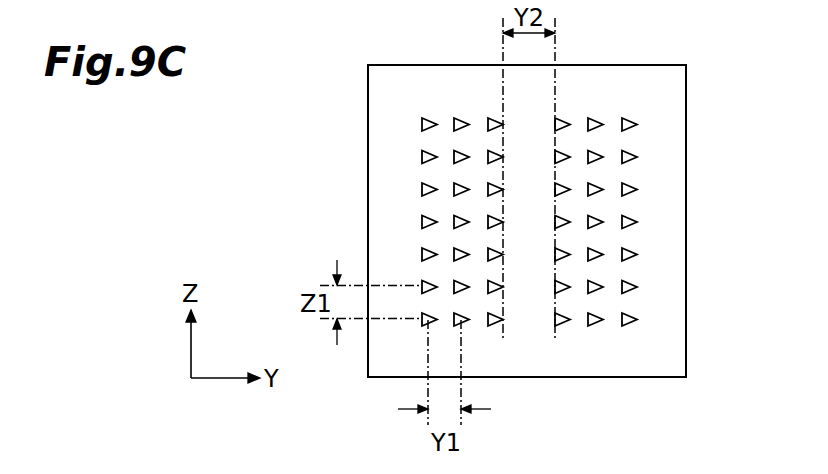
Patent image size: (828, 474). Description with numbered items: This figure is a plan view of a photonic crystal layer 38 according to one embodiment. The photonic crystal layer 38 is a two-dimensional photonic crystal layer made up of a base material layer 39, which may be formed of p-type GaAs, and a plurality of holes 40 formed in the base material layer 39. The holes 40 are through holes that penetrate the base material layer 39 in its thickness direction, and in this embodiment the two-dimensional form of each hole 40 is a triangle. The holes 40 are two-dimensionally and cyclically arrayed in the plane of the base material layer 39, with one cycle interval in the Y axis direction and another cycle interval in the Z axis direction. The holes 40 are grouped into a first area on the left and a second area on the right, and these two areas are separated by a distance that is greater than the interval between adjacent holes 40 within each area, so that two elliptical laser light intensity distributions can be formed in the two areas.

The photonic crystal layer 38 is at (617, 64).
The base material layer 39 is at (387, 141).
The hole 40 is at (424, 118).